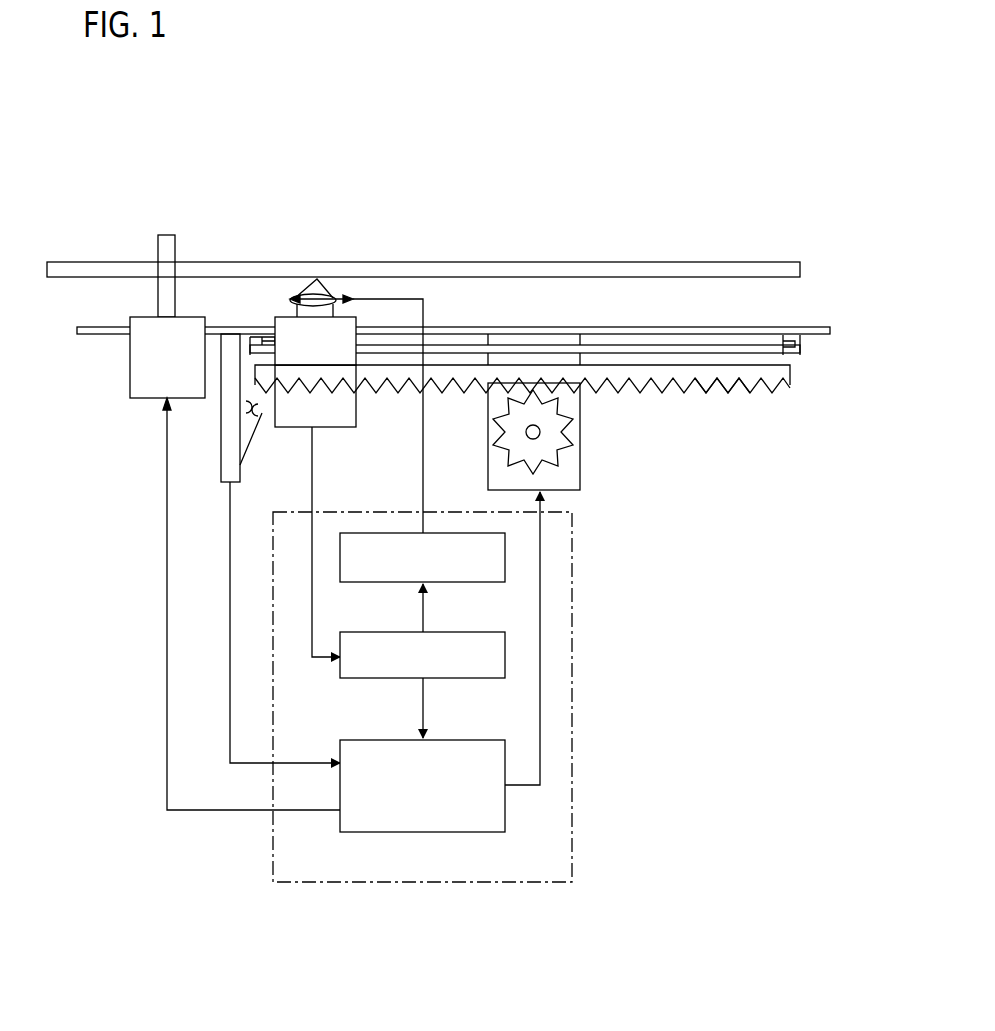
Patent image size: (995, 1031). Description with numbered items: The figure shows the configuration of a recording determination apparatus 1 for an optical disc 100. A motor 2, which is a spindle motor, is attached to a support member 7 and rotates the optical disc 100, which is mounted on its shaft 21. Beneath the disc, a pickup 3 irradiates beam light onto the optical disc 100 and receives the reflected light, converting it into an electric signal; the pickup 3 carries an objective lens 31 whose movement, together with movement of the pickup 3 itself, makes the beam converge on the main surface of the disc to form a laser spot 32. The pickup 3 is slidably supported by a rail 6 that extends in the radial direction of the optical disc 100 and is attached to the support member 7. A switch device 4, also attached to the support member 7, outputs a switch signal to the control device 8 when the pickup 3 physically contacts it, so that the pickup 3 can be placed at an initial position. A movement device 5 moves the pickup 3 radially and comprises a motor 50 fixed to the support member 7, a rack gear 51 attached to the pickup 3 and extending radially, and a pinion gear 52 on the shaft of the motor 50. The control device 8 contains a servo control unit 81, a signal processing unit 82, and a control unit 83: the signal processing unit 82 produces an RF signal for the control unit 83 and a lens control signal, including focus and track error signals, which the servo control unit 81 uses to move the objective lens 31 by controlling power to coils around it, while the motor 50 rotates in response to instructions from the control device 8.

The recording determination apparatus 1 is at (430, 132).
The optical disc 100 is at (603, 262).
The motor 2 is at (184, 338).
The shaft 21 is at (158, 248).
The pickup 3 is at (328, 412).
The objective lens 31 is at (290, 298).
The laser spot 32 is at (333, 292).
The switch device 4 is at (221, 465).
The movement device 5 is at (592, 456).
The motor 50 is at (582, 402).
The rack gear 51 is at (728, 390).
The pinion gear 52 is at (500, 425).
The rail 6 is at (802, 350).
The support member 7 is at (808, 327).
The control device 8 is at (575, 838).
The servo control unit 81 is at (460, 582).
The signal processing unit 82 is at (455, 678).
The control unit 83 is at (455, 832).